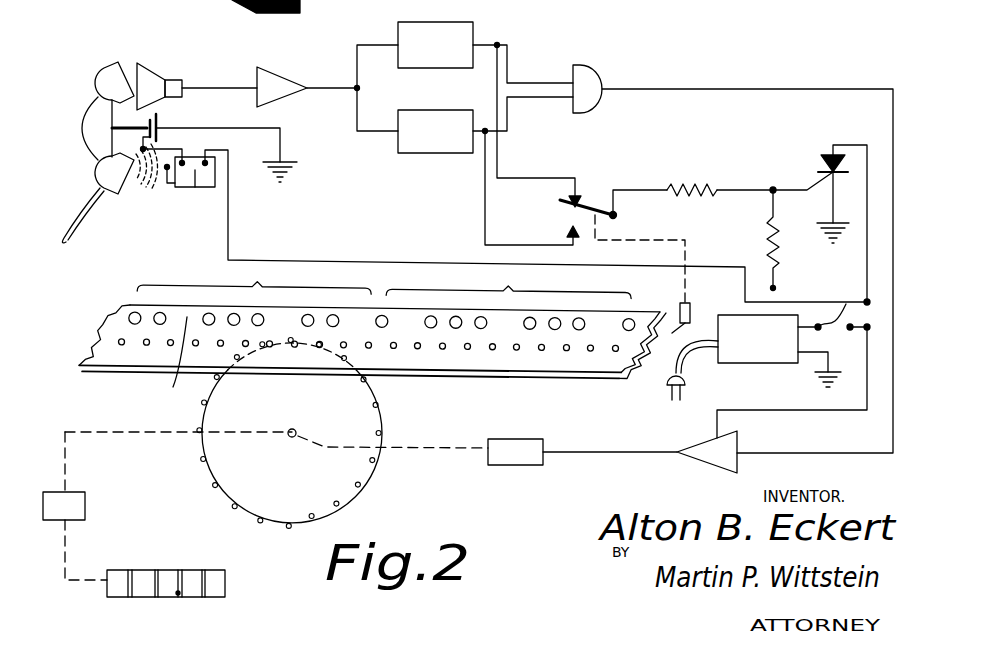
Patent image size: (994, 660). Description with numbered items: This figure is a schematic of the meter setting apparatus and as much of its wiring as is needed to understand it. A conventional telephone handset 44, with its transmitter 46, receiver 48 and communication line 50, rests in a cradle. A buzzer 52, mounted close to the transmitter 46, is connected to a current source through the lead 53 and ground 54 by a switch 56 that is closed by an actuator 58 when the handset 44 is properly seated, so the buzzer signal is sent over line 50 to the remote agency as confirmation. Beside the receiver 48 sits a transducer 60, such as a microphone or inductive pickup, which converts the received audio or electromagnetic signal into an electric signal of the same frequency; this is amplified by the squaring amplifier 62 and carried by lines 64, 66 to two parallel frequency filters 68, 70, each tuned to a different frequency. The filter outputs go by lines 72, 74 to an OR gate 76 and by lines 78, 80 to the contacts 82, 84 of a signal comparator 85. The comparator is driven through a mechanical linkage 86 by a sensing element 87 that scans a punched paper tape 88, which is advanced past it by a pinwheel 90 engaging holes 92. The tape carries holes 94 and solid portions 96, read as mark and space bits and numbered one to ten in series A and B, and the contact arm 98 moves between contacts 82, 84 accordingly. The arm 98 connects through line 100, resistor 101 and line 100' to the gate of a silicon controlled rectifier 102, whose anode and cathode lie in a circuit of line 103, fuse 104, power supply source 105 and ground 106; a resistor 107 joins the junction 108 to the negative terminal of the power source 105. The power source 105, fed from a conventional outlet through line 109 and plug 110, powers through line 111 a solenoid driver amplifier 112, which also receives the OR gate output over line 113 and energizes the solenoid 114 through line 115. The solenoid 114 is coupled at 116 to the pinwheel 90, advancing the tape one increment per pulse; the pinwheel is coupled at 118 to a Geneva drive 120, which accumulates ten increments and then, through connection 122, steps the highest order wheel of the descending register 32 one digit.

The descending register 32 is at (172, 569).
The telephone handset 44 is at (88, 114).
The transmitter 46 is at (130, 193).
The receiver 48 is at (122, 66).
The communication line 50 is at (85, 212).
The buzzer 52 is at (175, 187).
The lead 53 is at (230, 223).
The ground 54 is at (280, 142).
The switch 56 is at (153, 123).
The actuator 58 is at (118, 135).
The transducer 60 is at (155, 82).
The squaring amplifier 62 is at (282, 83).
The line 64 is at (372, 44).
The line 66 is at (380, 133).
The frequency filter 68 is at (473, 30).
The frequency filter 70 is at (445, 154).
The line 72 is at (510, 68).
The line 74 is at (508, 117).
The OR gate 76 is at (600, 70).
The line 78 is at (500, 157).
The line 80 is at (485, 212).
The contact 82 is at (567, 198).
The contact 84 is at (565, 233).
The signal comparator 85 is at (587, 178).
The mechanical linkage 86 is at (688, 284).
The sensing element 87 is at (666, 341).
The punched paper tape 88 is at (632, 374).
The pinwheel 90 is at (360, 423).
The holes 92 is at (542, 345).
The holes 94 is at (362, 334).
The solid portions 96 is at (160, 361).
The contact arm 98 is at (592, 200).
The line 100 is at (640, 211).
The line 100' is at (728, 210).
The resistor 101 is at (700, 184).
The silicon controlled rectifier 102 is at (818, 163).
The line 103 is at (885, 127).
The fuse 104 is at (852, 298).
The power supply source 105 is at (778, 363).
The ground 106 is at (843, 237).
The resistor 107 is at (770, 240).
The junction 108 is at (773, 188).
The line 109 is at (705, 336).
The plug 110 is at (683, 383).
The line 111 is at (817, 410).
The solenoid driver amplifier 112 is at (700, 446).
The line 113 is at (742, 89).
The solenoid 114 is at (527, 413).
The line 115 is at (600, 452).
The driving connection 116 is at (465, 452).
The driving connection 118 is at (172, 430).
The Geneva drive 120 is at (77, 500).
The connection 122 is at (70, 550).